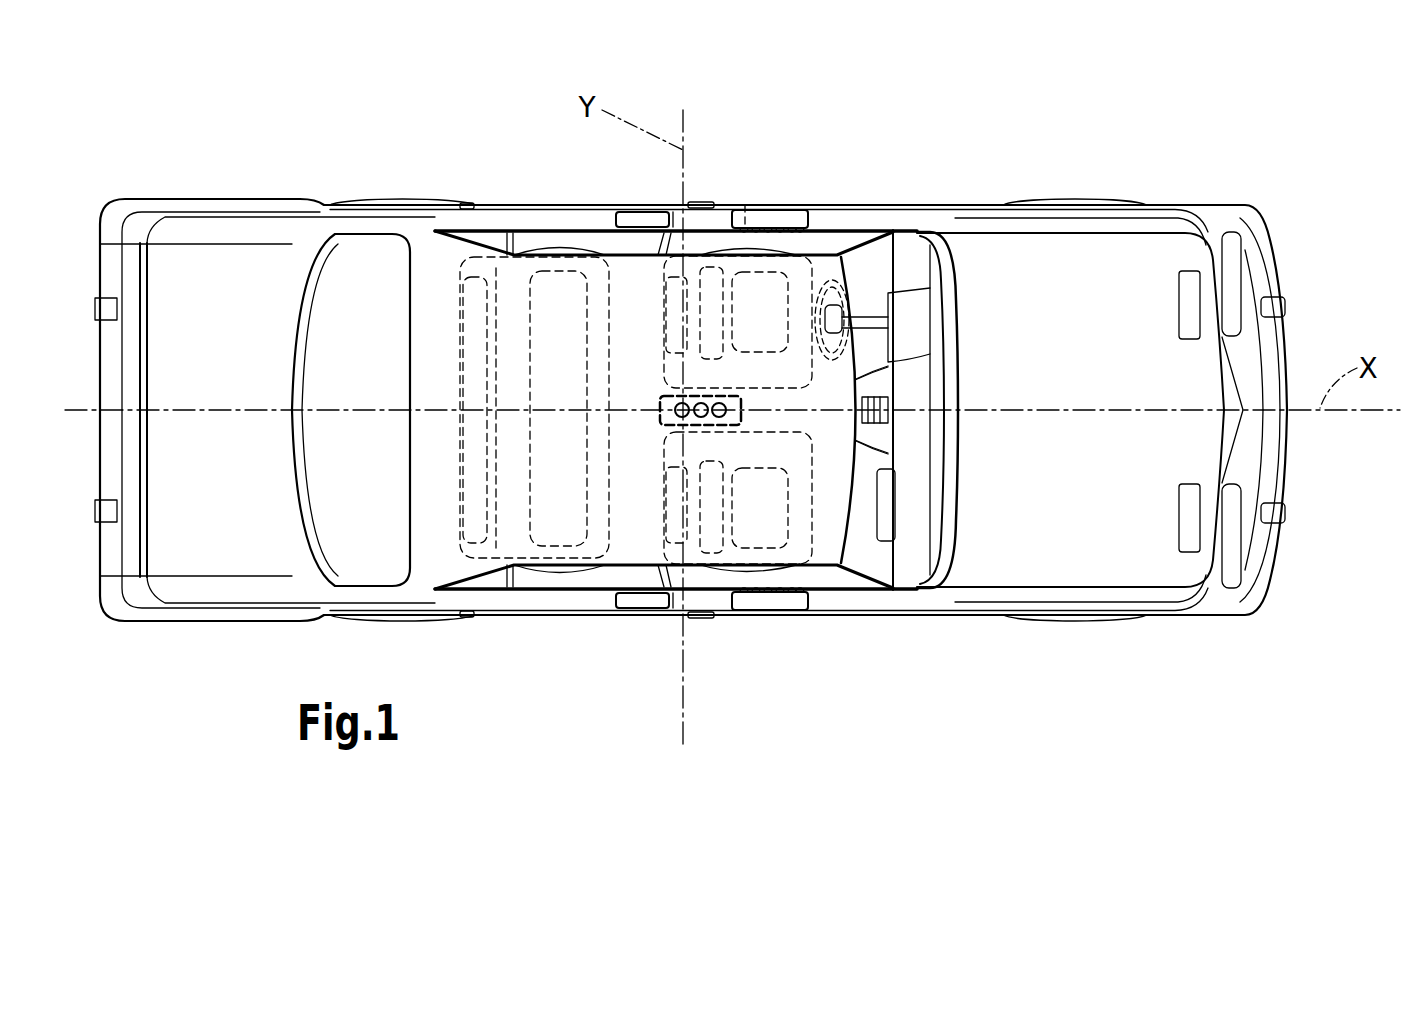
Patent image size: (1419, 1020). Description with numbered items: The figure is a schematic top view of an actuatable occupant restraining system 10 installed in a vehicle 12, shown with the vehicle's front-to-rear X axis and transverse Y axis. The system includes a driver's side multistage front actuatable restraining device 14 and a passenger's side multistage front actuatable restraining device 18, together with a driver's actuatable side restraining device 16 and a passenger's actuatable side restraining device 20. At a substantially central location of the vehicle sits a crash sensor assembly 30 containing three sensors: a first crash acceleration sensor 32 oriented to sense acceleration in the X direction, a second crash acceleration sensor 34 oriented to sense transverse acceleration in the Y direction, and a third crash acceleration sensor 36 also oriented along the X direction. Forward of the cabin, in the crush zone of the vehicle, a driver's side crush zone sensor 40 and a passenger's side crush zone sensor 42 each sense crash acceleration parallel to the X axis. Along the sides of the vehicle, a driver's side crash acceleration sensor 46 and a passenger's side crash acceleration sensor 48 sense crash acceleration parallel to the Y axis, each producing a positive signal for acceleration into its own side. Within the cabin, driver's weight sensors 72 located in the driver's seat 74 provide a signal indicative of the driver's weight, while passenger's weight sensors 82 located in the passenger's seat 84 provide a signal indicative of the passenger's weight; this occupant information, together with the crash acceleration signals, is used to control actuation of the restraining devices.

The actuatable occupant restraining system 10 is at (1195, 130).
The vehicle 12 is at (970, 600).
The driver's side multistage front actuatable restraining device 14 is at (785, 273).
The driver's actuatable side restraining device 16 is at (745, 205).
The passenger's side multistage front actuatable restraining device 18 is at (884, 540).
The passenger's actuatable side restraining device 20 is at (760, 612).
The crash sensor assembly 30 is at (660, 426).
The first crash acceleration sensor 32 is at (680, 398).
The second crash acceleration sensor 34 is at (699, 400).
The third crash acceleration sensor 36 is at (722, 402).
The driver's side crush zone sensor 40 is at (1183, 306).
The passenger's side crush zone sensor 42 is at (1183, 518).
The driver's side crash acceleration sensor 46 is at (645, 214).
The passenger's side crash acceleration sensor 48 is at (638, 602).
The driver's weight sensors 72 is at (768, 283).
The driver's seat 74 is at (841, 387).
The passenger's weight sensors 82 is at (764, 503).
The passenger's seat 84 is at (800, 447).